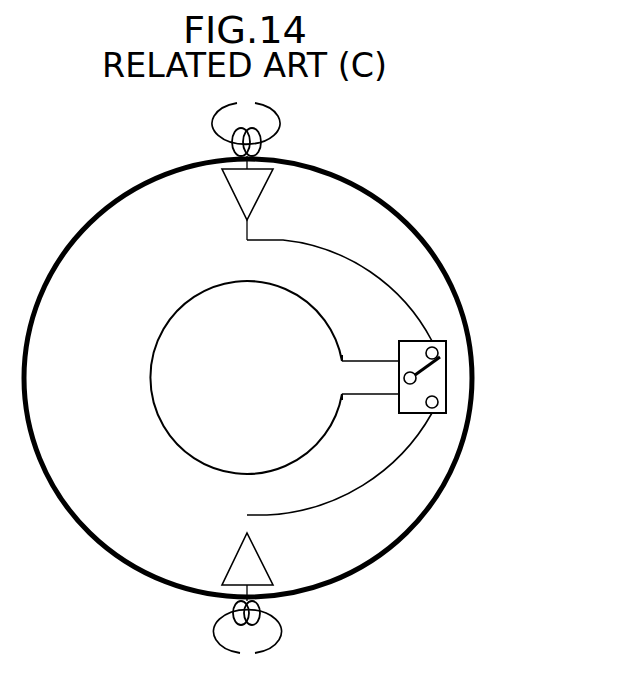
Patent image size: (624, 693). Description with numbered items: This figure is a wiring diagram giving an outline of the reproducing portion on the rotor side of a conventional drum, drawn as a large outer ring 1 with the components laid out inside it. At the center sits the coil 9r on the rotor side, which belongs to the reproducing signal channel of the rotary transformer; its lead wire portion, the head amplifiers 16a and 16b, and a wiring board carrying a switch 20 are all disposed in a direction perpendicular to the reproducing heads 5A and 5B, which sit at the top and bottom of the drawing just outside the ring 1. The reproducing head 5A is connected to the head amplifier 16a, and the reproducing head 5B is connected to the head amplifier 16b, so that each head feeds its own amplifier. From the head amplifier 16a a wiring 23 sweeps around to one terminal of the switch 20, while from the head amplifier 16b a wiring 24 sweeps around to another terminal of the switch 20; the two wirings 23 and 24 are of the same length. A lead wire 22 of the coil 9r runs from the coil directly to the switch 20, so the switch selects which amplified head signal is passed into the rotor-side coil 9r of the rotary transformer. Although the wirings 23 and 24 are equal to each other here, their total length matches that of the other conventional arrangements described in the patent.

The housing 1 is at (390, 203).
The reproducing head 5A is at (281, 124).
The reproducing head 5B is at (281, 632).
The coil on the rotor side 9r is at (158, 335).
The head amplifier 16a is at (235, 197).
The head amplifier 16b is at (233, 562).
The switch 20 is at (446, 376).
The lead wire 22 is at (352, 361).
The wiring 23 is at (318, 246).
The wiring 24 is at (358, 488).